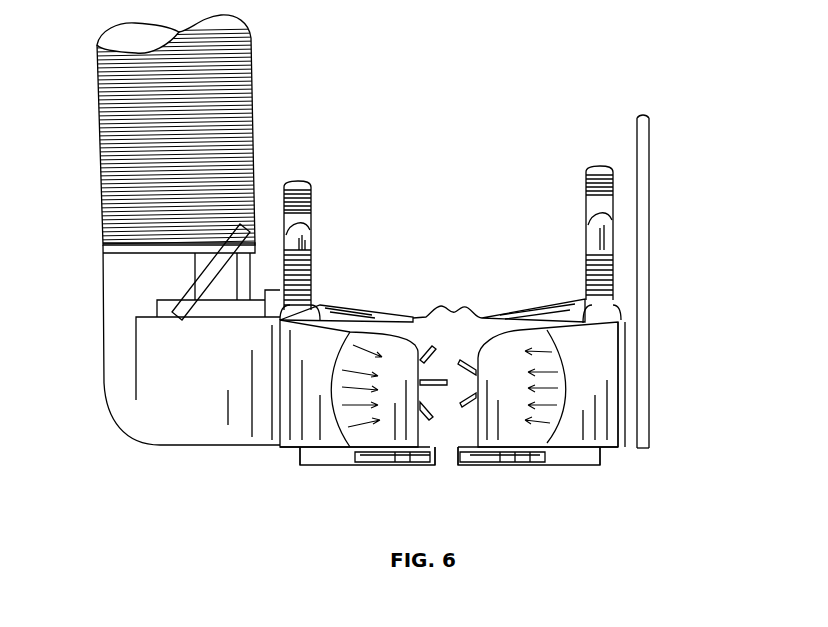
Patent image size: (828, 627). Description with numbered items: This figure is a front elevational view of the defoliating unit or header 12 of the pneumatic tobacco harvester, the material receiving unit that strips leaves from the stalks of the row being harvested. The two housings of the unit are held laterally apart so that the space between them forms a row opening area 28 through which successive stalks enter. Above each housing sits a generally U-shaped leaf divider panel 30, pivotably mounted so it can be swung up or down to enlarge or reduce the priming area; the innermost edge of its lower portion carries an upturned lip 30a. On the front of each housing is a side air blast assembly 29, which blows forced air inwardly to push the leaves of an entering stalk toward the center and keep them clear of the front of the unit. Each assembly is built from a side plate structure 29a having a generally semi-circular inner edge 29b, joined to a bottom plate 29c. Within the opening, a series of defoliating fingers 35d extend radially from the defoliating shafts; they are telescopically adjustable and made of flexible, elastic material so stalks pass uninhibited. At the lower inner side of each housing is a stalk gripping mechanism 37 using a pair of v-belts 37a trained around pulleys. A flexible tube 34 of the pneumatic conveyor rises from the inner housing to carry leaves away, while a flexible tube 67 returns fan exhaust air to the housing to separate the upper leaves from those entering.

The defoliating unit or header 12 is at (690, 369).
The row opening area 28 is at (453, 474).
The side air blast assembly 29 is at (284, 460).
The side plate structure 29a is at (300, 328).
The semi-circular inner edge 29b is at (345, 352).
The bottom plate 29c is at (300, 450).
The leaf divider panel 30 is at (337, 306).
The upturned lip 30a is at (474, 314).
The flexible tube 34 is at (120, 122).
The defoliating fingers 35d is at (438, 387).
The stalk gripping mechanism 37 is at (382, 482).
The v-belts 37a is at (408, 466).
The flexible tube 67 is at (310, 186).